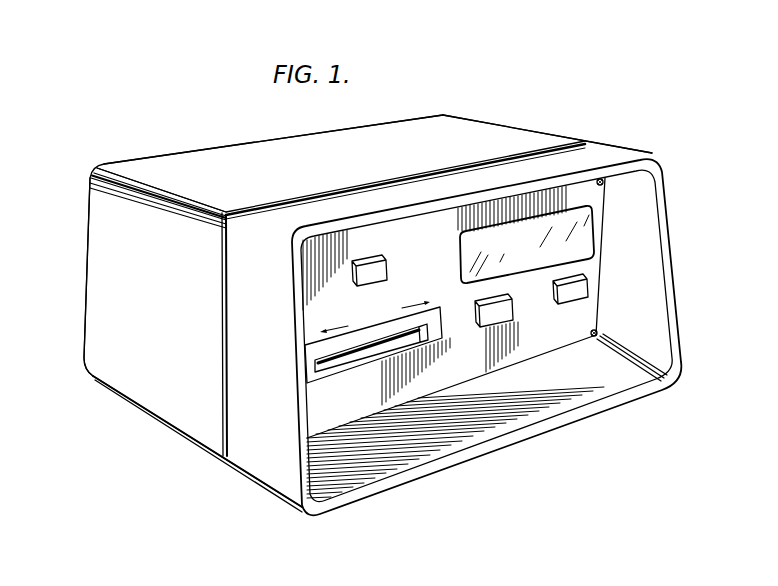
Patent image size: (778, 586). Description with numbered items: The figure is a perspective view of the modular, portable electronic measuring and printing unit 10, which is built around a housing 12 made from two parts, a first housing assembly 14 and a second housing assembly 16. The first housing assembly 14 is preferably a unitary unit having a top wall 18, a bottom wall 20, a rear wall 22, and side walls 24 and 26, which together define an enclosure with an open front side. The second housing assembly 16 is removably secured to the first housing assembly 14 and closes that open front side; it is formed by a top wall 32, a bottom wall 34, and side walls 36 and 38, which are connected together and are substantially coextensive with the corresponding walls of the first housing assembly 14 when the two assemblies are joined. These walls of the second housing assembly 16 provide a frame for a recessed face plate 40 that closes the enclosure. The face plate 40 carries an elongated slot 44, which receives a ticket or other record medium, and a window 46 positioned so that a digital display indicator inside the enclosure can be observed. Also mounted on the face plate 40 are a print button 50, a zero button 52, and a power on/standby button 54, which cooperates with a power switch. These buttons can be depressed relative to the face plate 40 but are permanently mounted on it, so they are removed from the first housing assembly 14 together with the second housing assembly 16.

The modular electronic measuring and printing unit 10 is at (112, 458).
The housing 12 is at (444, 115).
The first housing assembly 14 is at (326, 173).
The second housing assembly 16 is at (266, 352).
The top wall 18 is at (548, 138).
The bottom wall 20 is at (190, 438).
The rear wall 22 is at (190, 150).
The side wall 24 is at (118, 378).
The side wall 26 is at (488, 122).
The top wall 32 is at (373, 192).
The bottom wall 34 is at (503, 448).
The side wall 36 is at (284, 480).
The side wall 38 is at (652, 188).
The recessed face plate 40 is at (543, 349).
The elongated slot 44 is at (326, 380).
The window 46 is at (588, 233).
The print button 50 is at (389, 268).
The zero button 52 is at (502, 318).
The power on/standby button 54 is at (574, 300).